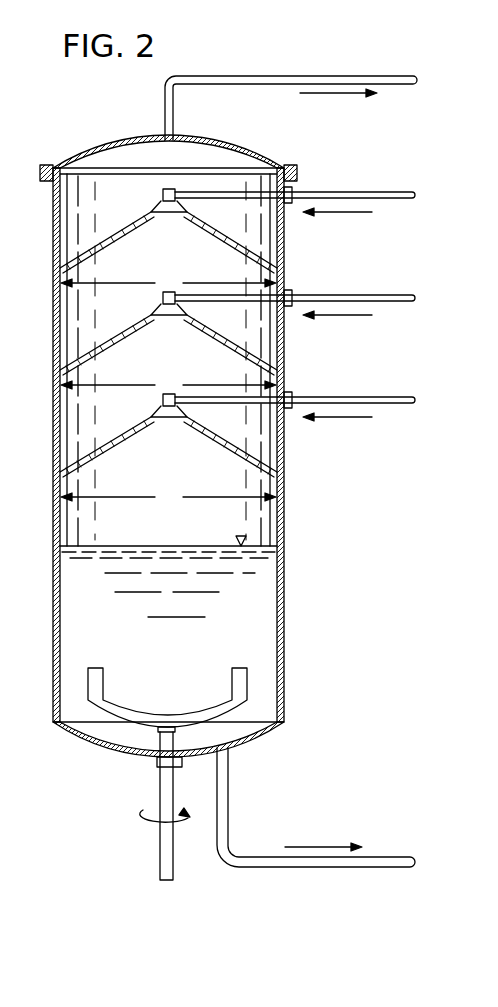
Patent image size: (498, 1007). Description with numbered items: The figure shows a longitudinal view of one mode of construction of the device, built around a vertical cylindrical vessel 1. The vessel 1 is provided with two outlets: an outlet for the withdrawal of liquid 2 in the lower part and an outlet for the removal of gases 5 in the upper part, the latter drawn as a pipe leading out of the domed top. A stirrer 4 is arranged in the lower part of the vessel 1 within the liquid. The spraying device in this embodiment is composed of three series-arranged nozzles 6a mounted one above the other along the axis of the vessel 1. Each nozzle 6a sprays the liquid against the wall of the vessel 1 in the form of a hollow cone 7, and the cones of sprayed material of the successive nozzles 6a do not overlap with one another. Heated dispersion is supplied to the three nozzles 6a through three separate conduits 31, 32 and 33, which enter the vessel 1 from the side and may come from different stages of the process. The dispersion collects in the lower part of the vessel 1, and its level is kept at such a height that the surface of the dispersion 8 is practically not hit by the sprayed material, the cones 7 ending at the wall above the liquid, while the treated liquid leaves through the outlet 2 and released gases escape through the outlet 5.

The vessel 1 is at (286, 516).
The outlet for liquid 2 is at (229, 800).
The conduit 31 is at (395, 198).
The conduit 32 is at (398, 303).
The conduit 33 is at (397, 405).
The stirrer 4 is at (237, 680).
The outlet for gas 5 is at (256, 86).
The nozzle 6a is at (163, 198).
The hollow cone 7 is at (168, 385).
The surface of the dispersion 8 is at (258, 608).